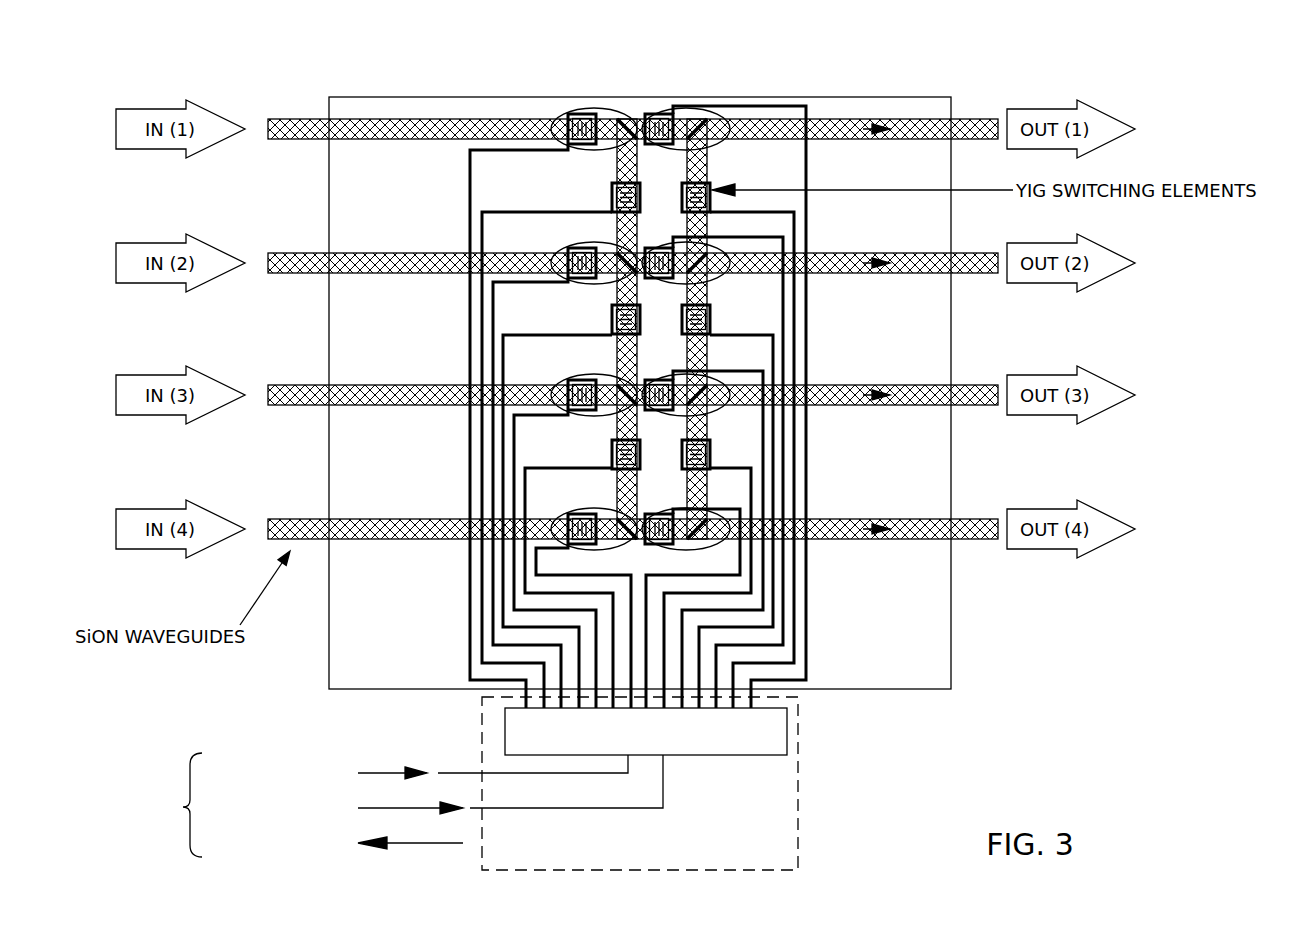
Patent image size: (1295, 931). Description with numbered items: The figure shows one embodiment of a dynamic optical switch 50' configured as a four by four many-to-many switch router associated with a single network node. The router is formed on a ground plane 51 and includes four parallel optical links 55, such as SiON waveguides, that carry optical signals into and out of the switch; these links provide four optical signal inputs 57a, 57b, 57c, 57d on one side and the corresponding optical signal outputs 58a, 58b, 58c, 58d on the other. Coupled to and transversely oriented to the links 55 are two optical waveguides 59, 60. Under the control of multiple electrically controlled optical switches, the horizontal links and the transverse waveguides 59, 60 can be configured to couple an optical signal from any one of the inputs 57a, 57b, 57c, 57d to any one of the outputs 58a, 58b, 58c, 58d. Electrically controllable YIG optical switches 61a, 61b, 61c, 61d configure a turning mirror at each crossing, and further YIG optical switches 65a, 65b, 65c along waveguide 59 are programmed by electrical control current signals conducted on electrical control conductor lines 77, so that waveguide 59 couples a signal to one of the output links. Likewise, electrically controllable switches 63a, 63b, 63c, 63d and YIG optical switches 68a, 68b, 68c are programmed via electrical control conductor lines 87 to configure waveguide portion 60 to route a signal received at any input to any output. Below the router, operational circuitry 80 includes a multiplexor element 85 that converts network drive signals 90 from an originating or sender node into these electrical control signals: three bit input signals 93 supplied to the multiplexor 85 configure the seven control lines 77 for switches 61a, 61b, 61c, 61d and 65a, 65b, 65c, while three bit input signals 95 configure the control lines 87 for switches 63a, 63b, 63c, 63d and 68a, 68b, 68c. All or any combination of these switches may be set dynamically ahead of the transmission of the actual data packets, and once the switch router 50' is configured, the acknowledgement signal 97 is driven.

The dynamic optical switch 50' is at (640, 346).
The ground plane 51 is at (951, 683).
The parallel optical links 55 is at (348, 253).
The optical signal input 57a is at (288, 119).
The optical signal input 57b is at (288, 253).
The optical signal input 57c is at (288, 385).
The optical signal input 57d is at (288, 519).
The optical signal output 58a is at (977, 119).
The optical signal output 58b is at (982, 253).
The optical signal output 58c is at (981, 385).
The optical signal output 58d is at (981, 519).
The optical waveguide 59 is at (606, 162).
The optical waveguide 60 is at (723, 156).
The YIG optical switch 61a is at (598, 107).
The YIG optical switch 61b is at (583, 247).
The YIG optical switch 61c is at (594, 395).
The YIG optical switch 61d is at (593, 510).
The electrically controllable switch 63a is at (723, 117).
The electrically controllable switch 63b is at (720, 277).
The electrically controllable switch 63c is at (686, 395).
The electrically controllable switch 63d is at (687, 550).
The YIG optical switch 65a is at (612, 194).
The YIG optical switch 65b is at (612, 315).
The YIG optical switch 65c is at (612, 447).
The YIG optical switch 68a is at (682, 197).
The YIG optical switch 68b is at (682, 320).
The YIG optical switch 68c is at (682, 455).
The electrical control conductor lines 77 is at (575, 570).
The electrical control conductor lines 87 is at (702, 570).
The operational circuitry 80 is at (798, 792).
The multiplexor element 85 is at (727, 755).
The drive signals 90 is at (253, 805).
The input signals 93 is at (453, 772).
The input signals 95 is at (540, 810).
The acknowledgement signal 97 is at (430, 845).